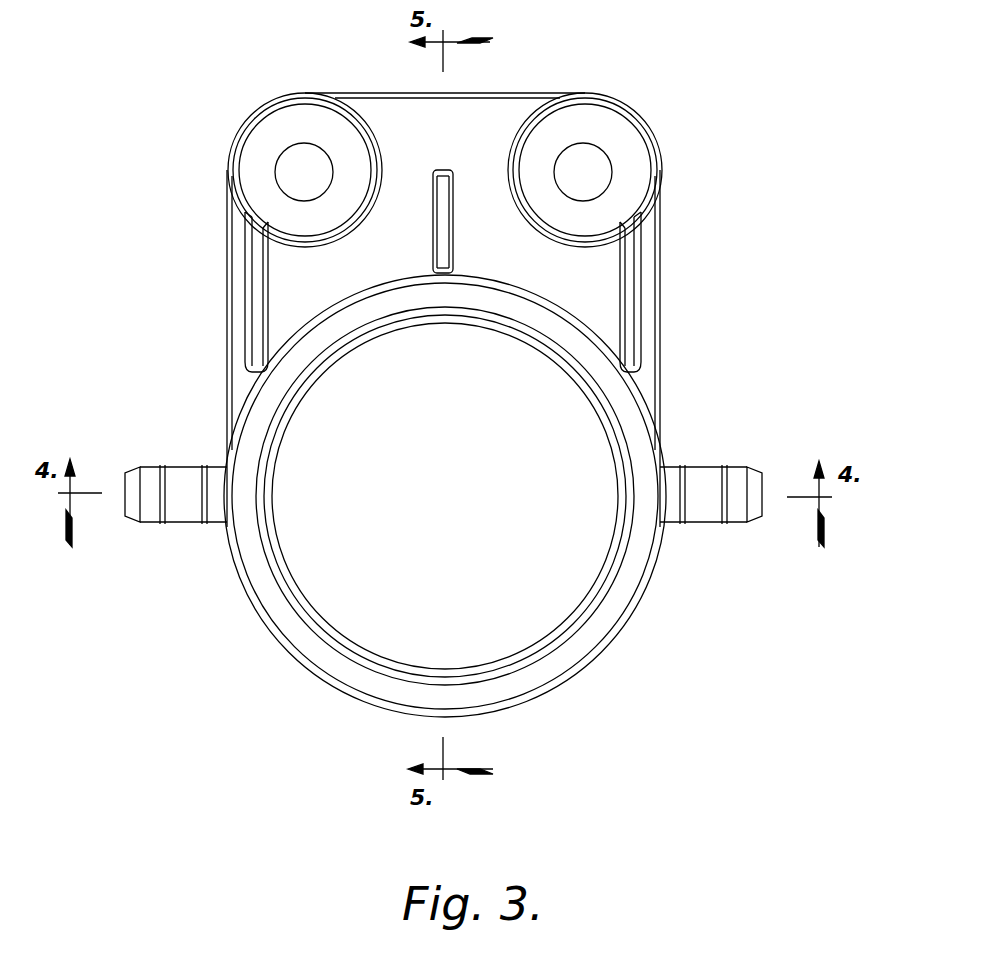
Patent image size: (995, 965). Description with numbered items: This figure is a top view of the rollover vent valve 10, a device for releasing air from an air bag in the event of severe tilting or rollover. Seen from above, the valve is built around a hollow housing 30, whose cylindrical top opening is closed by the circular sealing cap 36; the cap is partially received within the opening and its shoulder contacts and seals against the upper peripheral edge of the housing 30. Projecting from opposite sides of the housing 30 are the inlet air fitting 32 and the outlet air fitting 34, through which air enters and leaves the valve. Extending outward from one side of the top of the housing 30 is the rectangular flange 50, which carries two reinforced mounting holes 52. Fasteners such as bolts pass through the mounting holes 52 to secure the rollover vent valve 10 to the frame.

The rollover vent valve 10 is at (778, 290).
The housing 30 is at (663, 416).
The inlet air fitting 32 is at (182, 482).
The outlet air fitting 34 is at (753, 522).
The sealing cap 36 is at (393, 588).
The rectangular flange 50 is at (487, 118).
The reinforced mounting holes 52 is at (310, 166).